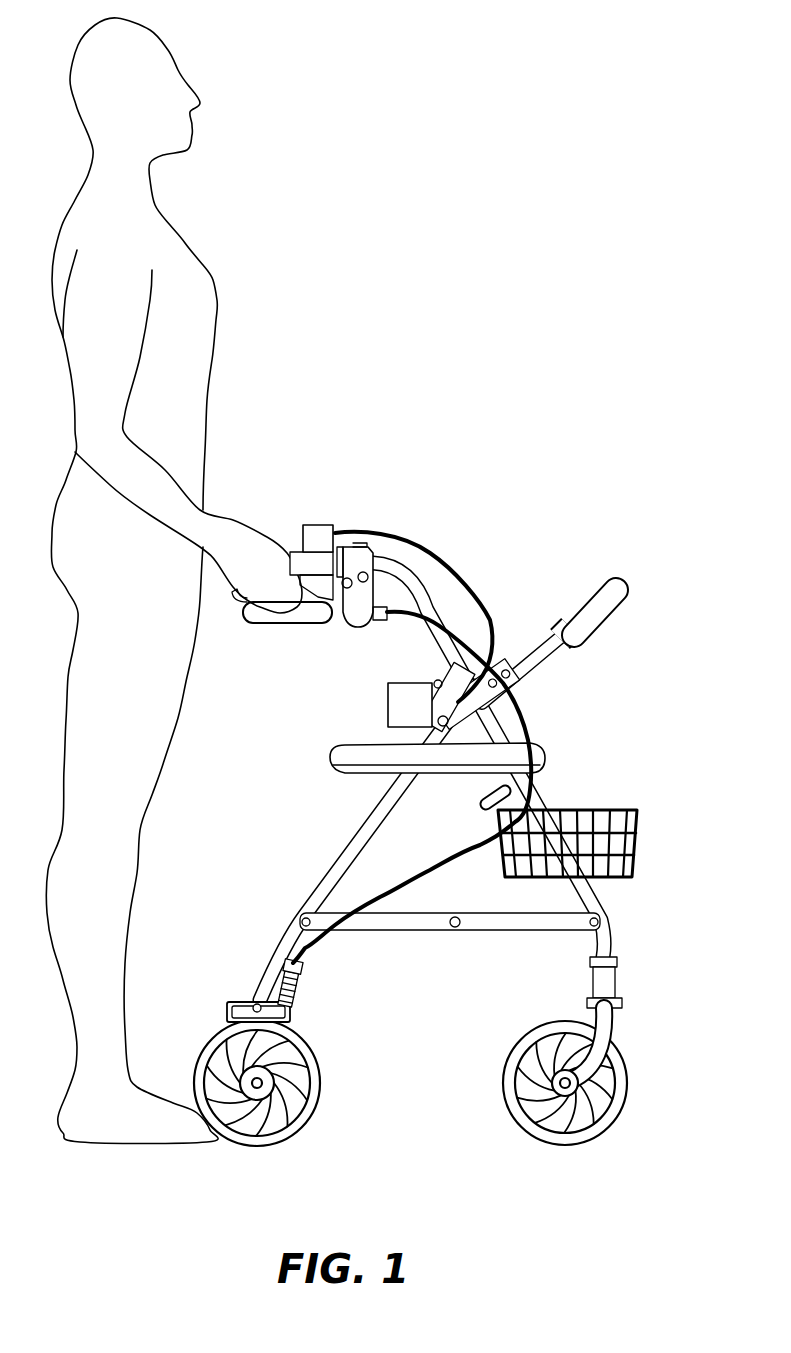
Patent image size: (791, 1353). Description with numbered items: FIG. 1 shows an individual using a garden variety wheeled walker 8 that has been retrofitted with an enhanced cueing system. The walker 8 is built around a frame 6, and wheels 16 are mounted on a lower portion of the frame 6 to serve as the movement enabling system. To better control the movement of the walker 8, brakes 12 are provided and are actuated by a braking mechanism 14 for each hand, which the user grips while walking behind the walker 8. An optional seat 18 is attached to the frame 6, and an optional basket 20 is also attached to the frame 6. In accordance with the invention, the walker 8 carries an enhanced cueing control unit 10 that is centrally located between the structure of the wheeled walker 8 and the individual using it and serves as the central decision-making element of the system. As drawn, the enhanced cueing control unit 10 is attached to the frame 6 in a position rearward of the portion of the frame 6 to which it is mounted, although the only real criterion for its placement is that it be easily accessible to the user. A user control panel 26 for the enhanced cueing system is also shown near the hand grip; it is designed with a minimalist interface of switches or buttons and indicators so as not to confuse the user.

The frame 6 is at (333, 861).
The wheeled walker 8 is at (497, 465).
The enhanced cueing control unit 10 is at (385, 705).
The brakes 12 is at (297, 1010).
The braking mechanism 14 is at (241, 625).
The wheels 16 is at (503, 1110).
The seat 18 is at (545, 757).
The basket 20 is at (637, 811).
The user control panel 26 is at (337, 520).